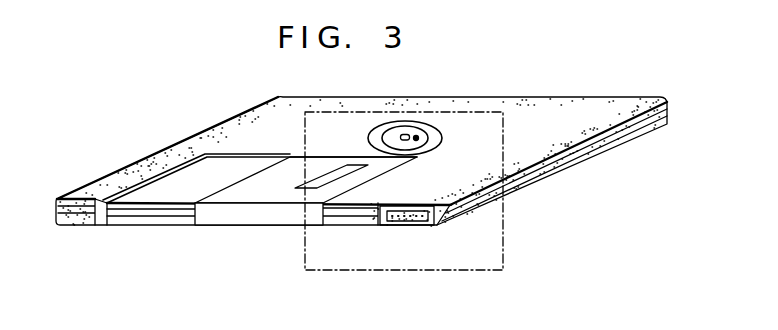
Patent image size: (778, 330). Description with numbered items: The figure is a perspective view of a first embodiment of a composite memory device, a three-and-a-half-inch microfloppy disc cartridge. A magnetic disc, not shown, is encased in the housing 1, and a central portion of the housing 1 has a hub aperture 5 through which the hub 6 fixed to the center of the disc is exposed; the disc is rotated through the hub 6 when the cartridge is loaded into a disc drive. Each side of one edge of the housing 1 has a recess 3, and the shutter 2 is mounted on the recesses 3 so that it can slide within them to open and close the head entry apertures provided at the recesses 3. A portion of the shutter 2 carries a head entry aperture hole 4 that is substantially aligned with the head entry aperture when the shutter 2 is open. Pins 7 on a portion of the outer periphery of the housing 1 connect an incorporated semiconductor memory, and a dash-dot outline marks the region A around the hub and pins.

The housing 1 is at (628, 96).
The shutter 2 is at (213, 217).
The recesses 3 is at (165, 190).
The head entry aperture holes 4 is at (315, 186).
The hub aperture 5 is at (432, 132).
The hub 6 is at (403, 131).
The pins 7 is at (418, 217).
The enlarged region A is at (503, 243).